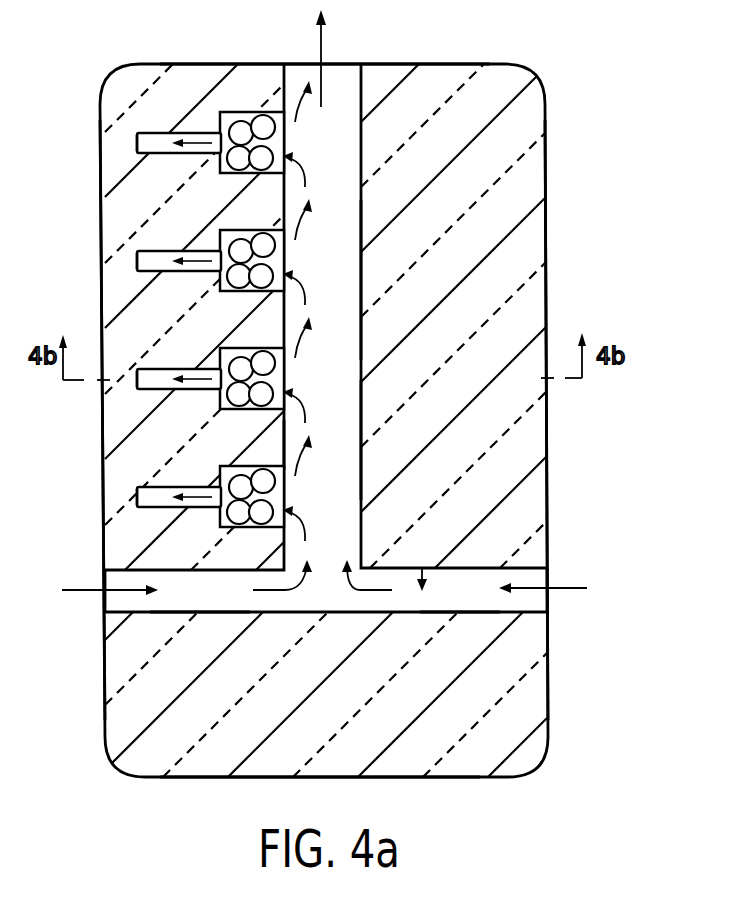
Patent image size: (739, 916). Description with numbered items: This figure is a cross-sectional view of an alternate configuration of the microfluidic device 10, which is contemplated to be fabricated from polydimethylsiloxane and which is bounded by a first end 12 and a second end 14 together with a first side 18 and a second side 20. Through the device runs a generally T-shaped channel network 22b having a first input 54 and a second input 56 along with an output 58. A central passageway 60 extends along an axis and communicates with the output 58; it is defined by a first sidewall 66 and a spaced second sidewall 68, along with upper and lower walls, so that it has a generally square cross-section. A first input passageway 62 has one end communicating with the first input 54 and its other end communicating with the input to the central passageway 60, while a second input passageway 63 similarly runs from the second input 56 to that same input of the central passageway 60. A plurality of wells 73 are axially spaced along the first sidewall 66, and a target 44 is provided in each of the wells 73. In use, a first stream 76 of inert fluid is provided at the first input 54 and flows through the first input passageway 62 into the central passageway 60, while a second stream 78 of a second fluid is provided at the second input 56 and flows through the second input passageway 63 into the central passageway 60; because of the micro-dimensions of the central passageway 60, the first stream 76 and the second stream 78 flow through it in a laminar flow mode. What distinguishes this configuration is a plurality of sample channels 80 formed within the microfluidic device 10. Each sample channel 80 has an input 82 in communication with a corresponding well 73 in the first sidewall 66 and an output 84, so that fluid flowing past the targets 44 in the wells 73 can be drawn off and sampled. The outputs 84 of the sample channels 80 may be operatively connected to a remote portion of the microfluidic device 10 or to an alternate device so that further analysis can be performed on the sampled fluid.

The microfluidic device 10 is at (562, 792).
The first end 12 is at (202, 778).
The second end 14 is at (443, 64).
The first side 18 is at (103, 471).
The second side 20 is at (548, 432).
The channel network 22b is at (425, 567).
The targets 44 is at (242, 128).
The first input 54 is at (105, 613).
The second input 56 is at (548, 600).
The output 58 is at (340, 64).
The central passageway 60 is at (362, 290).
The first input passageway 62 is at (184, 610).
The second input passageway 63 is at (446, 609).
The first sidewall 66 is at (296, 447).
The second sidewall 68 is at (362, 402).
The wells 73 is at (286, 128).
The first stream 76 is at (85, 588).
The second stream 78 is at (572, 588).
The sample channels 80 is at (160, 133).
The input 82 is at (215, 132).
The output 84 is at (137, 143).